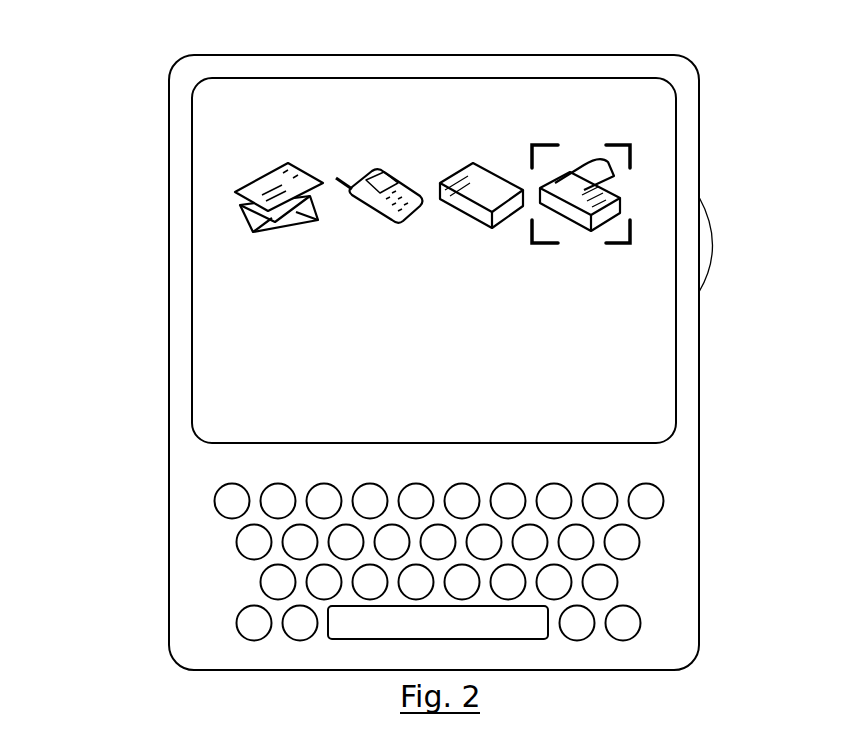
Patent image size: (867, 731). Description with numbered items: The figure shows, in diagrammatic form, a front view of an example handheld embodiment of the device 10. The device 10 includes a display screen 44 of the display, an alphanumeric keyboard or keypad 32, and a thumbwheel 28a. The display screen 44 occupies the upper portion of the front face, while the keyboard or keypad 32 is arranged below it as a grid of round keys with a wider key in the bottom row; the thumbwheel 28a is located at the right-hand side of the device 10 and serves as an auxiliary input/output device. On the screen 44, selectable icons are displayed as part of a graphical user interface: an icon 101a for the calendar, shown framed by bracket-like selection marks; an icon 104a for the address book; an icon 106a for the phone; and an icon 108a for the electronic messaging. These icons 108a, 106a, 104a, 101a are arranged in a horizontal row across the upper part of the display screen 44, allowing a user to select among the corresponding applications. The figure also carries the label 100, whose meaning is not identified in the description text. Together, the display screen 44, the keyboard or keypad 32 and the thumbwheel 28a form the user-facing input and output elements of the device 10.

The device 10 is at (156, 44).
The display screen 44 is at (250, 379).
The thumbwheel 28a is at (712, 271).
The alphanumeric keyboard or keypad 32 is at (673, 579).
The icon for the electronic messaging 108a is at (258, 237).
The icon for the phone 106a is at (371, 208).
The icon for the address book 104a is at (462, 220).
The icon for the calendar 101a is at (575, 225).
The home screen 100 is at (534, 730).